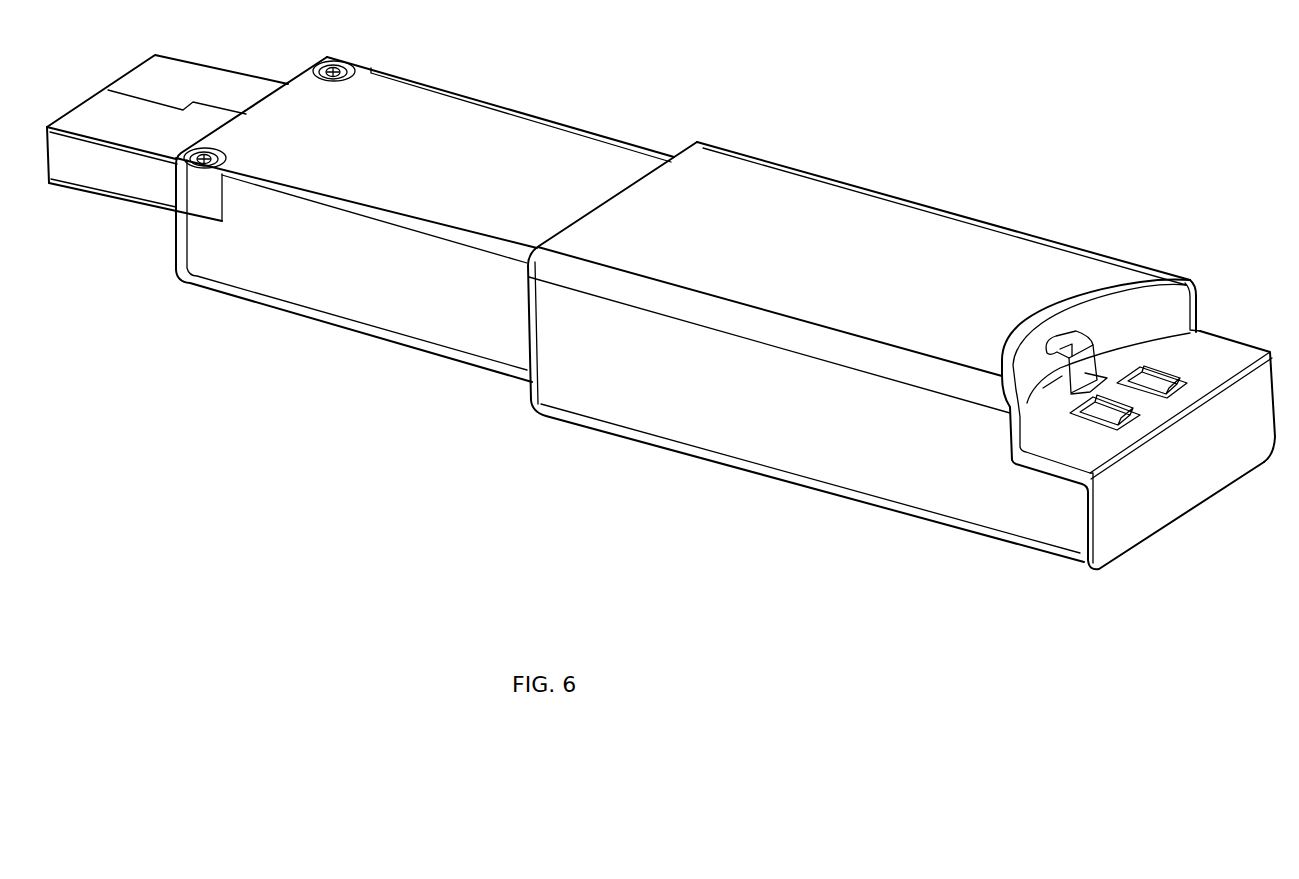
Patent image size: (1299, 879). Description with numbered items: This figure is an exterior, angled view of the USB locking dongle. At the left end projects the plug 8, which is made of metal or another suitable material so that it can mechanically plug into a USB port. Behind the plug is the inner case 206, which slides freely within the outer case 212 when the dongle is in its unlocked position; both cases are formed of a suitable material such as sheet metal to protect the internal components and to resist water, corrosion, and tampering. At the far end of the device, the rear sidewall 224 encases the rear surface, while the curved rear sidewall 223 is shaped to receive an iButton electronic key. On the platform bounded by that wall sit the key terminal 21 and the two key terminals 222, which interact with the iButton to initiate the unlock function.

The plug 8 is at (101, 168).
The inner case 206 is at (525, 157).
The outer case 212 is at (966, 238).
The key terminal 21 is at (1078, 343).
The key terminals 222 is at (1157, 378).
The rear sidewall 223 is at (1170, 308).
The rear sidewall 224 is at (1162, 510).